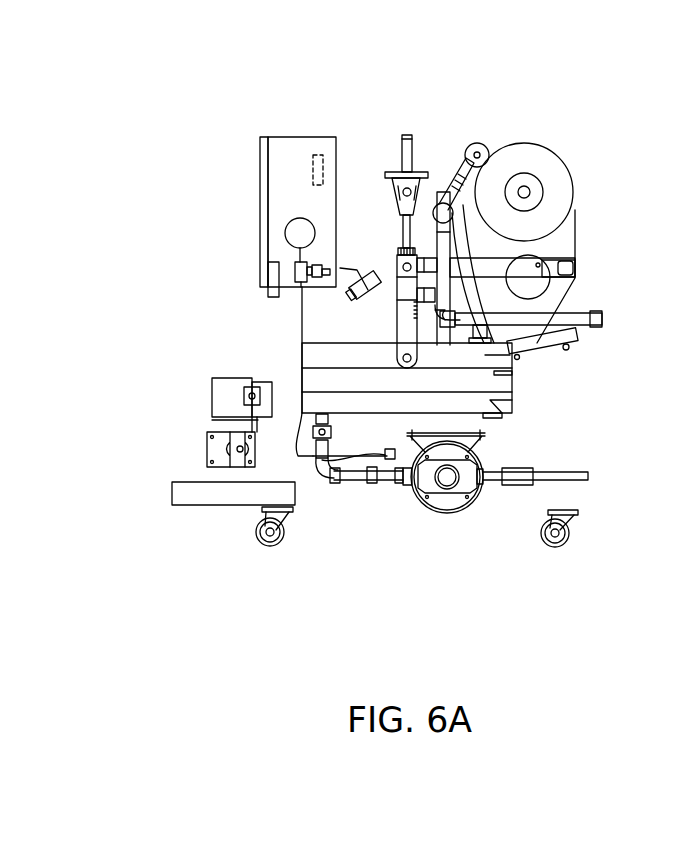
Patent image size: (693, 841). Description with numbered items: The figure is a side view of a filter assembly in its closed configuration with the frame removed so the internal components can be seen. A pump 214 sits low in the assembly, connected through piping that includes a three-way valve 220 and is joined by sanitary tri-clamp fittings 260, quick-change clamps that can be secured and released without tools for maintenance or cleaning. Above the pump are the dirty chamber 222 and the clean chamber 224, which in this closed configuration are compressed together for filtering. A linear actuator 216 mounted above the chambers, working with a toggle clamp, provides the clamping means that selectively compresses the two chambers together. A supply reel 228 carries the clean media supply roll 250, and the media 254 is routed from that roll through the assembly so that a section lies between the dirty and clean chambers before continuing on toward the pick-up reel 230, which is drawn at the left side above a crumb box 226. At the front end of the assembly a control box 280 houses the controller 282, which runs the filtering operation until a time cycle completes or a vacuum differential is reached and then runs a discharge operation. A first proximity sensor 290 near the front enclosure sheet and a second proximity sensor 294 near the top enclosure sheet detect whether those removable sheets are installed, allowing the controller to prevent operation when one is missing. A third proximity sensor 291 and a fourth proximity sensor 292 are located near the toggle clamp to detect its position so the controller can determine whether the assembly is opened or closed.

The pump 214 is at (440, 505).
The linear actuator 216 is at (490, 253).
The three-way valve 220 is at (420, 246).
The dirty chamber 222 is at (487, 356).
The clean chamber 224 is at (490, 400).
The crumb box 226 is at (178, 500).
The supply reel 228 is at (525, 180).
The pick-up reel 230 is at (248, 397).
The clean media supply roll 250 is at (532, 158).
The media 254 is at (518, 380).
The sanitary tri-clamp fitting 260 is at (303, 432).
The control box 280 is at (287, 175).
The controller 282 is at (315, 160).
The first proximity sensor 290 is at (275, 268).
The third proximity sensor 291 is at (355, 288).
The fourth proximity sensor 292 is at (440, 288).
The second proximity sensor 294 is at (402, 145).